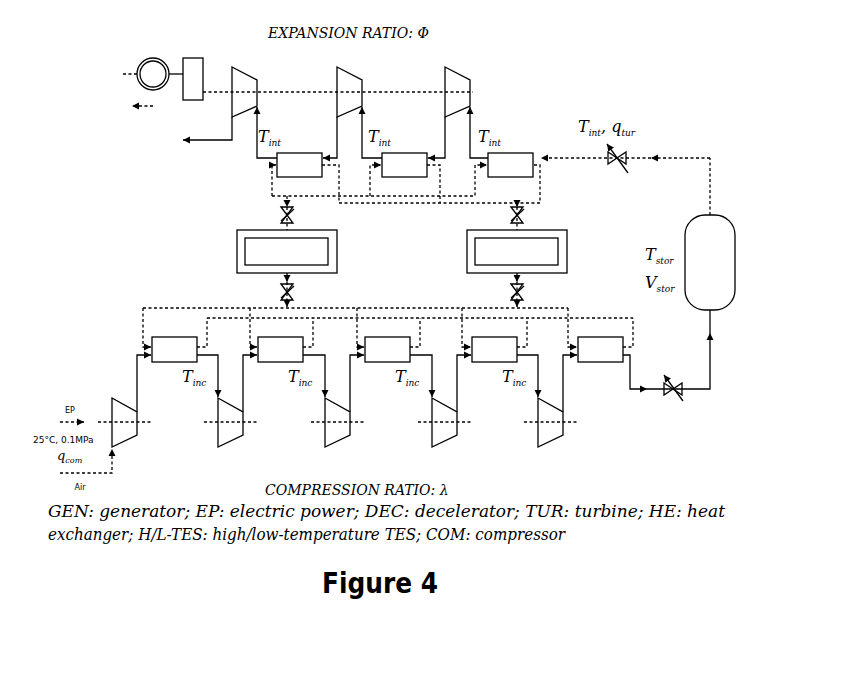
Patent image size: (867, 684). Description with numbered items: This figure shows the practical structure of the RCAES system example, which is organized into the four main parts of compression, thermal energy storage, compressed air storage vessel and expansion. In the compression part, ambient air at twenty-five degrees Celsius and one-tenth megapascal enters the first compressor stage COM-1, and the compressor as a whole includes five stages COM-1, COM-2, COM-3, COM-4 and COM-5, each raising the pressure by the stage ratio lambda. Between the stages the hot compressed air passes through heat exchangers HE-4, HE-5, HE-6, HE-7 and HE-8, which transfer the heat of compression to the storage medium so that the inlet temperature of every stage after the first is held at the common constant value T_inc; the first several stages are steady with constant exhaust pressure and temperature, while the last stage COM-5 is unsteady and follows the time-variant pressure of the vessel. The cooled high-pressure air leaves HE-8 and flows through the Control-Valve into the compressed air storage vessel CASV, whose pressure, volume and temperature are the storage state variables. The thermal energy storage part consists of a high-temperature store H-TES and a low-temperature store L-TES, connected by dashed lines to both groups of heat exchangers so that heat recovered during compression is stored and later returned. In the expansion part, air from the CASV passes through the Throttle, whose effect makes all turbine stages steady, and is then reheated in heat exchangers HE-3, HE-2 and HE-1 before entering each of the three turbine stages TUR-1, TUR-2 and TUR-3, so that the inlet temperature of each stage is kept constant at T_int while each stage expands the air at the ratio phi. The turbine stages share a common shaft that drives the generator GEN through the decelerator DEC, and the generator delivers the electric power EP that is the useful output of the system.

The generator GEN is at (153, 74).
The decelerator DEC is at (193, 79).
The electric power EP is at (142, 114).
The turbine stage 1 TUR-1 is at (457, 84).
The turbine stage 2 TUR-2 is at (349, 84).
The turbine stage 3 TUR-3 is at (244, 84).
The heat exchanger 1 HE-1 is at (299, 165).
The heat exchanger 2 HE-2 is at (404, 165).
The heat exchanger 3 HE-3 is at (510, 165).
The heat exchanger 4 HE-4 is at (174, 349).
The heat exchanger 5 HE-5 is at (280, 349).
The heat exchanger 6 HE-6 is at (387, 349).
The heat exchanger 7 HE-7 is at (494, 349).
The heat exchanger 8 HE-8 is at (600, 349).
The high-temperature TES H-TES is at (287, 251).
The low-temperature TES L-TES is at (517, 251).
The compressor stage 1 COM-1 is at (128, 434).
The compressor stage 2 COM-2 is at (230, 434).
The compressor stage 3 COM-3 is at (337, 434).
The compressor stage 4 COM-4 is at (444, 434).
The compressor stage 5 COM-5 is at (550, 434).
The compressed air storage vessel CASV is at (710, 262).
The throttle Throttle is at (617, 162).
The control valve Control-Valve is at (675, 392).